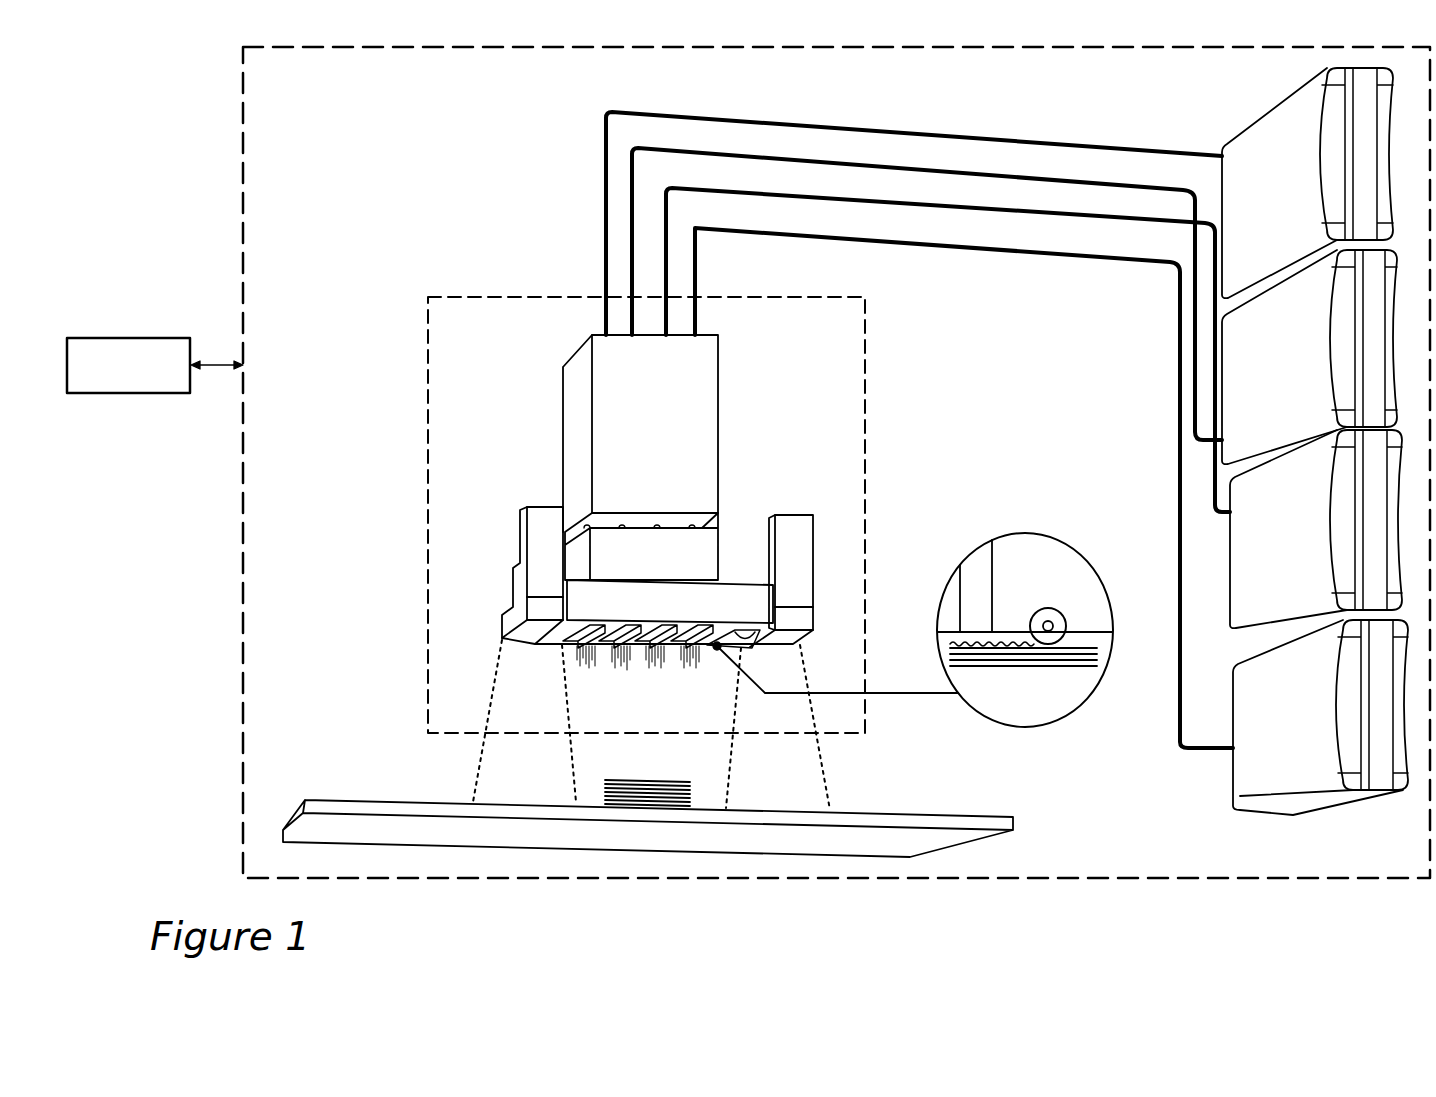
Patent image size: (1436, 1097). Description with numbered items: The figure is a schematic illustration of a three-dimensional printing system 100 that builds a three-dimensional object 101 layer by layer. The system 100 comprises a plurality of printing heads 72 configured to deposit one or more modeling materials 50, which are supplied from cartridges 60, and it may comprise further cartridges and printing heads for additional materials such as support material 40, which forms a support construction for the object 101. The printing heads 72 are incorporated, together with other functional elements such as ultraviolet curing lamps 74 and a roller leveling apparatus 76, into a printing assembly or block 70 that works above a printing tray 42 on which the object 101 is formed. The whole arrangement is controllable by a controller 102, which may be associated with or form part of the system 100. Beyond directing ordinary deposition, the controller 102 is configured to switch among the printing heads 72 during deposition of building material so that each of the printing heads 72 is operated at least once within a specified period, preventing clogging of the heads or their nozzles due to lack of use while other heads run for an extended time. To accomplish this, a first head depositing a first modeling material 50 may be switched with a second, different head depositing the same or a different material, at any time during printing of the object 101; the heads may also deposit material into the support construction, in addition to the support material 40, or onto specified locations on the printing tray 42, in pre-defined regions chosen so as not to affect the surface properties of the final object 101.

The 3D-printing system 100 is at (165, 131).
The controller 102 is at (92, 338).
The support material 40 is at (695, 258).
The modeling materials 50 is at (606, 118).
The cartridges 60 is at (1265, 117).
The printing assembly or block 70 is at (478, 293).
The printing heads 72 is at (575, 615).
The ultraviolet (UV) curing lamps 74 is at (502, 638).
The roller leveling apparatus 76 is at (1062, 590).
The printing tray 42 is at (333, 800).
The 3D object 101 is at (605, 792).